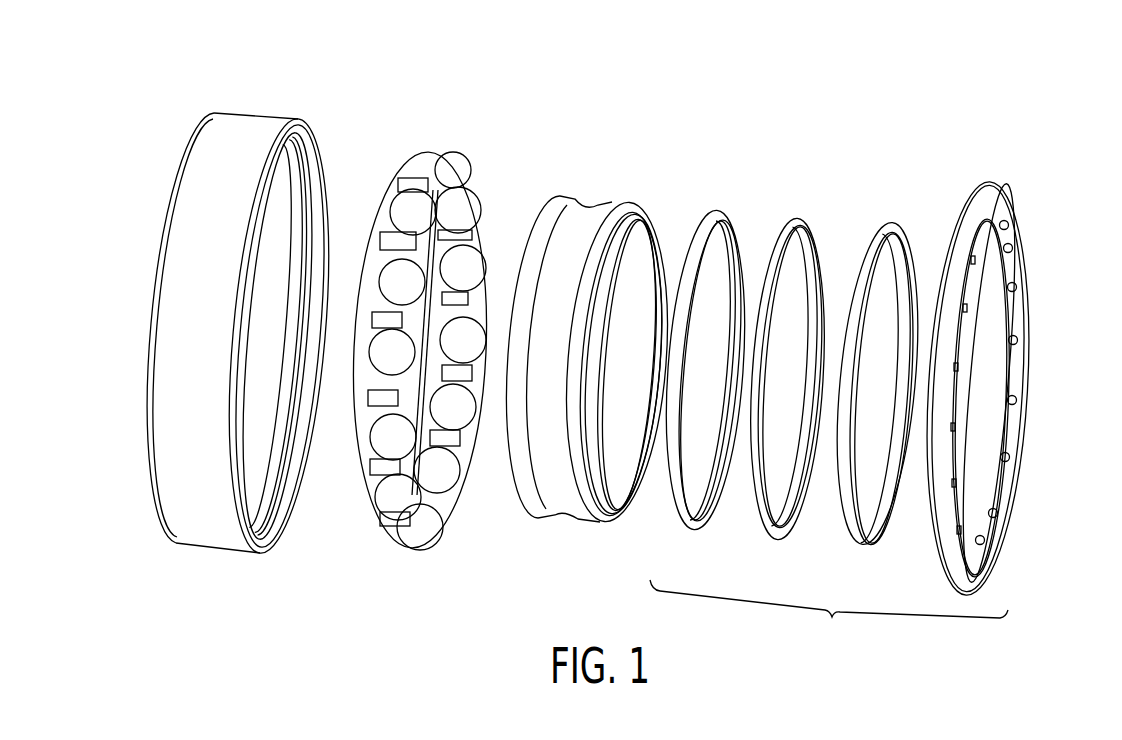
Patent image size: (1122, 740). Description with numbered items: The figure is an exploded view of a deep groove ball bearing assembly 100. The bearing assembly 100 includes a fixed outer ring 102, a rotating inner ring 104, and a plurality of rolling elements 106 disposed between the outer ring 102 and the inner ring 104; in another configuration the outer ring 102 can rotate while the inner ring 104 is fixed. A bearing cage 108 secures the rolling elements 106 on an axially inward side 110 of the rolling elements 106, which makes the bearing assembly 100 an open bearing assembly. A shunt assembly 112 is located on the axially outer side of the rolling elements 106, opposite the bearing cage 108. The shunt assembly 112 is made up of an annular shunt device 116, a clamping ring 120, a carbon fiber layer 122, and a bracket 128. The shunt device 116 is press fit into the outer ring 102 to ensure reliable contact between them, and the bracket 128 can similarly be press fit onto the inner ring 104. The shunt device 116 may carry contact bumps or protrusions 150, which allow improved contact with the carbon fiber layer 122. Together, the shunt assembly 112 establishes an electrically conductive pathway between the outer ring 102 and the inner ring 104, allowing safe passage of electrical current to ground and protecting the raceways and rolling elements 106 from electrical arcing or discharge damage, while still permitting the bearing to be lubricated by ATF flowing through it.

The bearing assembly 100 is at (645, 80).
The outer ring 102 is at (257, 115).
The inner ring 104 is at (575, 197).
The rolling elements 106 is at (455, 483).
The bearing cage 108 is at (362, 507).
The axially inward side 110 is at (420, 182).
The shunt assembly 112 is at (829, 617).
The shunt device 116 is at (998, 185).
The clamping ring 120 is at (720, 210).
The carbon fiber layer 122 is at (803, 211).
The bracket 128 is at (893, 221).
The contact bumps or protrusions 150 is at (1023, 286).